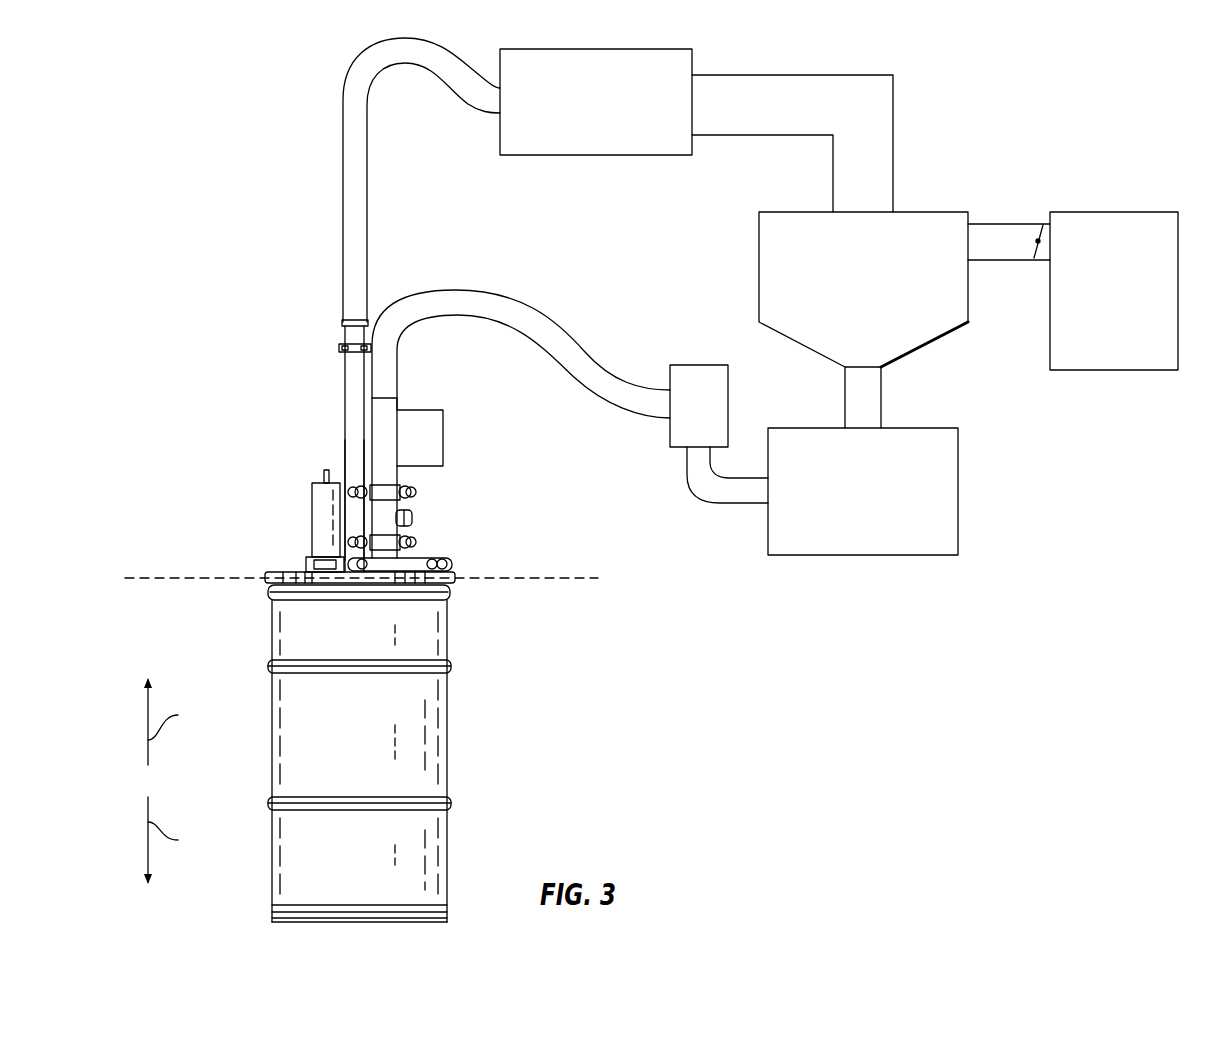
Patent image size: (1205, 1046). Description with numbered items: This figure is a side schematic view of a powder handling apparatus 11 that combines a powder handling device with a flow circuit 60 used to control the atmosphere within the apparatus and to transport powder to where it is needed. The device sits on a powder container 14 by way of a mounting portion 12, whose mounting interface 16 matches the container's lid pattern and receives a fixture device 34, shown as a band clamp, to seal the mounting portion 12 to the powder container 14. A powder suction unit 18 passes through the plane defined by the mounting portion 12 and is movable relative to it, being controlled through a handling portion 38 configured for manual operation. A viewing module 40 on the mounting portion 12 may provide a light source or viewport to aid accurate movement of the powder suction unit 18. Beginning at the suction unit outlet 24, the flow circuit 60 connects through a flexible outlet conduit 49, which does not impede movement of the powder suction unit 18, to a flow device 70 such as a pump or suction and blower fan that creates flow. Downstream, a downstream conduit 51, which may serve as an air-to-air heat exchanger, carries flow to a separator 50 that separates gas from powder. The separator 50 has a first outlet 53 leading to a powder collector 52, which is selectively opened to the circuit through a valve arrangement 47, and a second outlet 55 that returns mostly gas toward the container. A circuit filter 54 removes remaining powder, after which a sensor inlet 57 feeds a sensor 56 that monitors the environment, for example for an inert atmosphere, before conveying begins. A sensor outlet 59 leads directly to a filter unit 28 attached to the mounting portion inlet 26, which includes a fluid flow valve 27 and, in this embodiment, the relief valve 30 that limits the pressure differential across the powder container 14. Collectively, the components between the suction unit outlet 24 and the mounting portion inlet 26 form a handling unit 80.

The powder handling apparatus 11 is at (222, 132).
The mounting portion 12 is at (286, 570).
The powder container 14 is at (440, 745).
The mounting interface 16 is at (265, 590).
The powder suction unit 18 is at (345, 443).
The suction unit outlet 24 is at (330, 327).
The mounting portion inlet 26 is at (404, 486).
The fluid flow valve 27 is at (390, 492).
The filter unit 28 is at (407, 432).
The relief valve 30 is at (412, 522).
The fixture device 34 is at (448, 585).
The handling portion 38 is at (345, 395).
The viewing module 40 is at (318, 513).
The valve arrangement 47 is at (1034, 222).
The outlet conduit 49 is at (362, 235).
The separator 50 is at (863, 289).
The downstream conduit 51 is at (792, 143).
The powder collector 52 is at (1114, 291).
The first outlet 53 is at (1009, 242).
The circuit filter 54 is at (863, 491).
The second outlet 55 is at (881, 392).
The sensor 56 is at (699, 406).
The sensor inlet 57 is at (695, 468).
The sensor outlet 59 is at (562, 338).
The flow circuit 60 is at (1000, 58).
The flow device 70 is at (596, 102).
The handling unit 80 is at (894, 626).